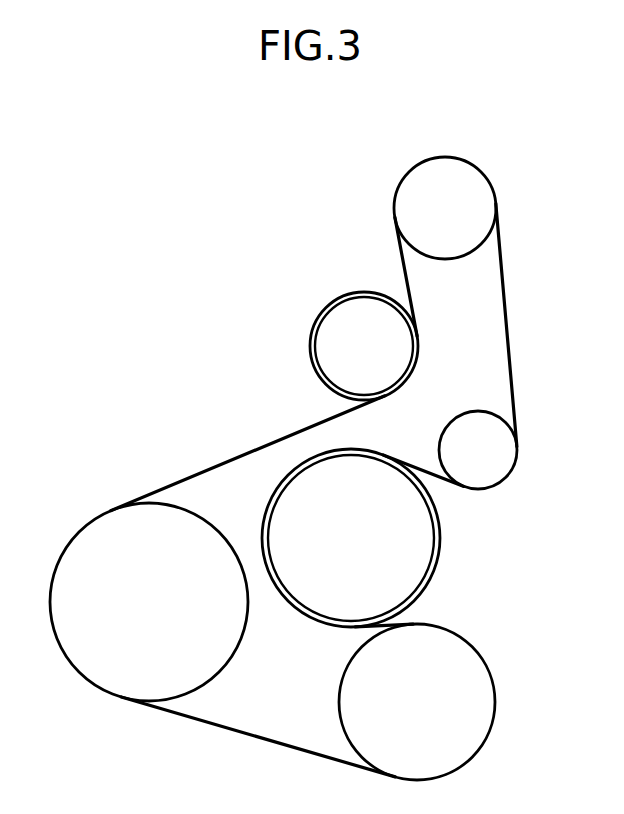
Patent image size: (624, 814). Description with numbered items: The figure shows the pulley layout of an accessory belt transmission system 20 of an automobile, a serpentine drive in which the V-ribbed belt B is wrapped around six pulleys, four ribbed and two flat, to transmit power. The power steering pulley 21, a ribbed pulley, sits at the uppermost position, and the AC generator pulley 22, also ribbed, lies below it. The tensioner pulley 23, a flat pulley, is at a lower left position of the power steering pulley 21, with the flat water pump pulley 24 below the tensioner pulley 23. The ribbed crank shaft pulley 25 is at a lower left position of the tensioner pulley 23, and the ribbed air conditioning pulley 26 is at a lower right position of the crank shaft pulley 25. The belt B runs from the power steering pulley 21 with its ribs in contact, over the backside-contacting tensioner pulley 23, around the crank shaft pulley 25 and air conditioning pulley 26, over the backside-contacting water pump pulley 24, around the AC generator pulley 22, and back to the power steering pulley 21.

The accessory belt transmission system 20 is at (230, 181).
The power steering pulley 21 is at (475, 183).
The AC generator pulley 22 is at (495, 465).
The tensioner pulley 23 is at (345, 310).
The water pump pulley 24 is at (420, 542).
The crank shaft pulley 25 is at (100, 673).
The air conditioning pulley 26 is at (480, 700).
The V-ribbed belt B is at (258, 450).